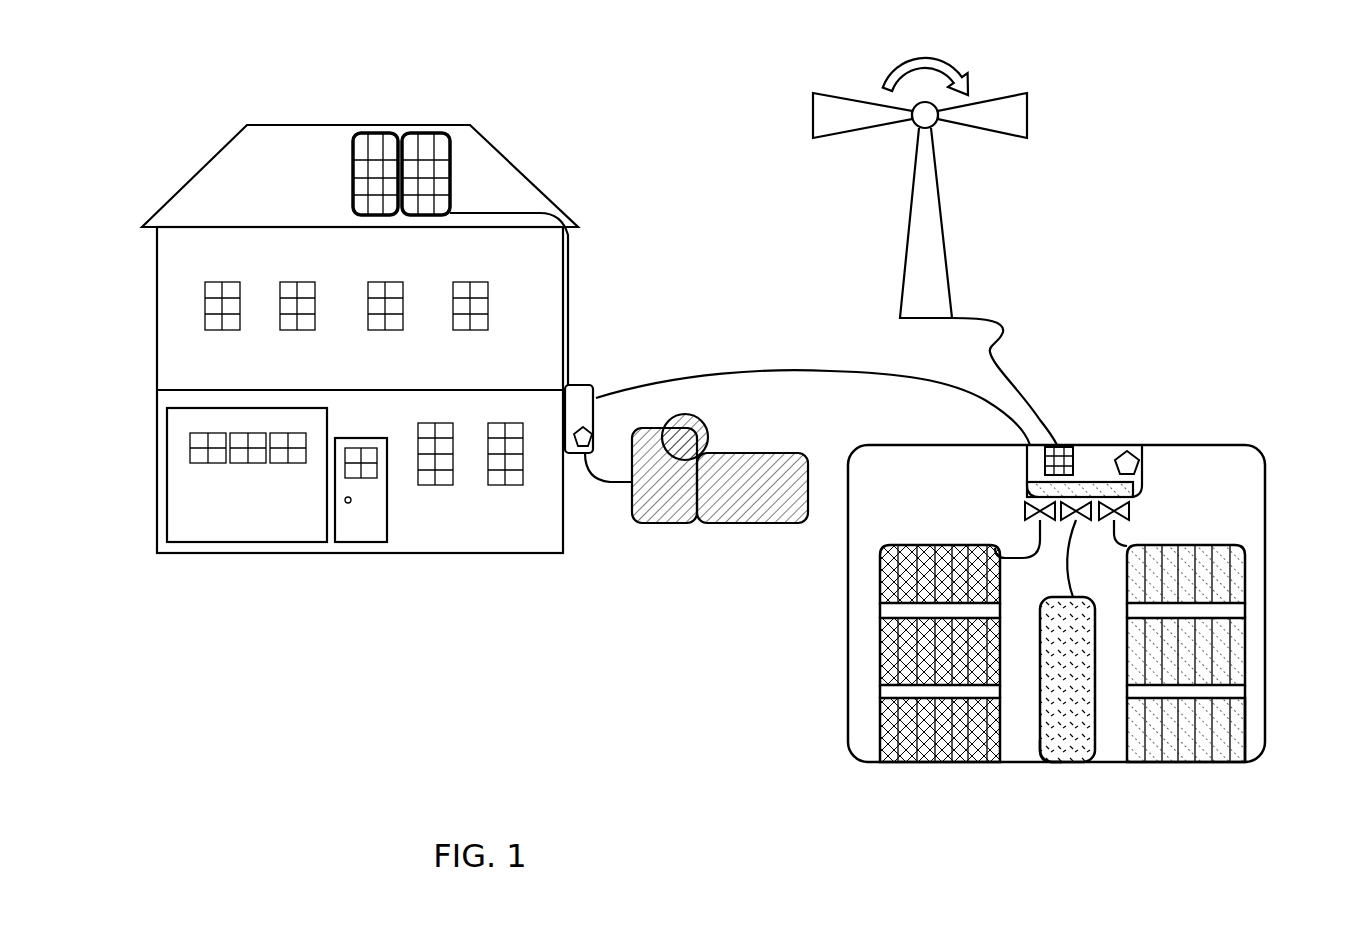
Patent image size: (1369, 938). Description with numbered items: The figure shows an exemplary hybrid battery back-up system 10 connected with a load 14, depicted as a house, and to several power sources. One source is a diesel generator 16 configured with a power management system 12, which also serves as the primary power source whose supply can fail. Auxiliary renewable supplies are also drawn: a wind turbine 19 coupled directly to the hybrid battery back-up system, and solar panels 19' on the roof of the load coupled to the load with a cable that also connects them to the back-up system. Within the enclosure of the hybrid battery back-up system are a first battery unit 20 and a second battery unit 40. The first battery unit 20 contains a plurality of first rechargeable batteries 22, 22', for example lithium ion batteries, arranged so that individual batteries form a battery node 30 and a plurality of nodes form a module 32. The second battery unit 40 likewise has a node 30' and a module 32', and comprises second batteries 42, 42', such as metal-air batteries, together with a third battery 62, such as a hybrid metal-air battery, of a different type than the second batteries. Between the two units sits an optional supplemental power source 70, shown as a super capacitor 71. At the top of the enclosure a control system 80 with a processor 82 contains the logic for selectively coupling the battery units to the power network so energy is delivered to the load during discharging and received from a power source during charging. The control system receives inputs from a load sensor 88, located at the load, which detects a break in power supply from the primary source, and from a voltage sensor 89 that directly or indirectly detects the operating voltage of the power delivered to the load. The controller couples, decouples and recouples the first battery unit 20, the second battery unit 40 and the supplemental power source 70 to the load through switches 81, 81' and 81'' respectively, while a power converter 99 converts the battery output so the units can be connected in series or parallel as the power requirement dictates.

The hybrid battery back-up system 10 is at (1194, 436).
The power management system 12 is at (633, 526).
The load 14 is at (568, 378).
The diesel generator 16 is at (730, 525).
The wind turbine 19 is at (935, 230).
The solar panel 19' is at (404, 137).
The first battery unit 20 is at (880, 694).
The first rechargeable battery 22 is at (919, 770).
The first rechargeable battery 22' is at (941, 770).
The battery node 30 is at (893, 574).
The module 32 is at (898, 651).
The battery node 30' is at (1222, 574).
The module 32' is at (1226, 651).
The second battery unit 40 is at (1220, 696).
The second battery 42 is at (1180, 773).
The second battery 42' is at (1187, 770).
The third battery 62 is at (1235, 765).
The supplemental power source 70 is at (1055, 765).
The super capacitor 71 is at (1040, 750).
The control system 80 is at (1120, 455).
The switch 81 is at (1004, 523).
The switch 81' is at (1152, 518).
The switch 81'' is at (1089, 549).
The processor 82 is at (1062, 445).
The load sensor 88 is at (583, 457).
The voltage sensor 89 is at (1142, 470).
The power converter 99 is at (1032, 478).